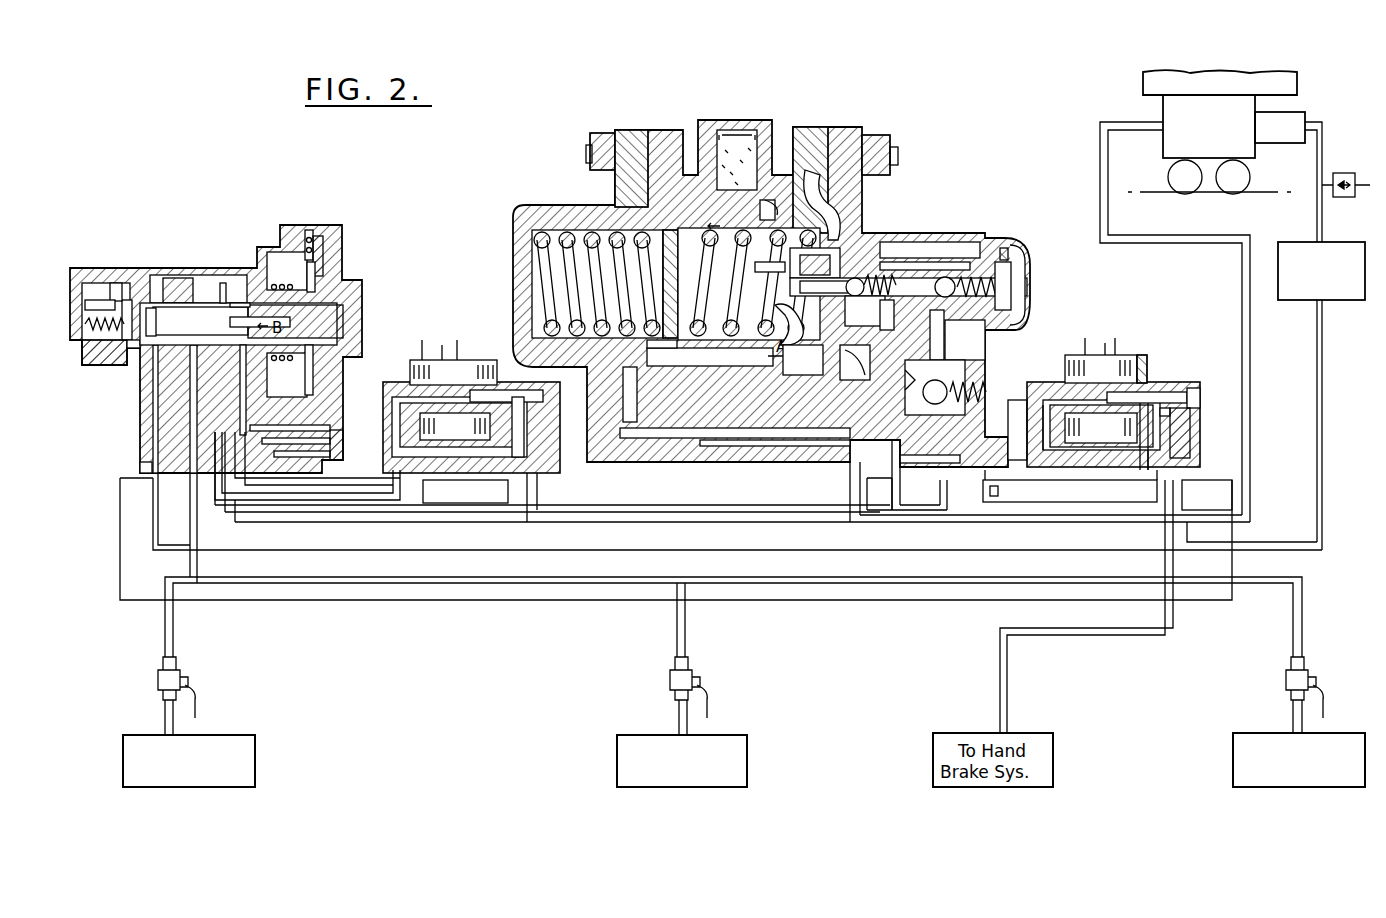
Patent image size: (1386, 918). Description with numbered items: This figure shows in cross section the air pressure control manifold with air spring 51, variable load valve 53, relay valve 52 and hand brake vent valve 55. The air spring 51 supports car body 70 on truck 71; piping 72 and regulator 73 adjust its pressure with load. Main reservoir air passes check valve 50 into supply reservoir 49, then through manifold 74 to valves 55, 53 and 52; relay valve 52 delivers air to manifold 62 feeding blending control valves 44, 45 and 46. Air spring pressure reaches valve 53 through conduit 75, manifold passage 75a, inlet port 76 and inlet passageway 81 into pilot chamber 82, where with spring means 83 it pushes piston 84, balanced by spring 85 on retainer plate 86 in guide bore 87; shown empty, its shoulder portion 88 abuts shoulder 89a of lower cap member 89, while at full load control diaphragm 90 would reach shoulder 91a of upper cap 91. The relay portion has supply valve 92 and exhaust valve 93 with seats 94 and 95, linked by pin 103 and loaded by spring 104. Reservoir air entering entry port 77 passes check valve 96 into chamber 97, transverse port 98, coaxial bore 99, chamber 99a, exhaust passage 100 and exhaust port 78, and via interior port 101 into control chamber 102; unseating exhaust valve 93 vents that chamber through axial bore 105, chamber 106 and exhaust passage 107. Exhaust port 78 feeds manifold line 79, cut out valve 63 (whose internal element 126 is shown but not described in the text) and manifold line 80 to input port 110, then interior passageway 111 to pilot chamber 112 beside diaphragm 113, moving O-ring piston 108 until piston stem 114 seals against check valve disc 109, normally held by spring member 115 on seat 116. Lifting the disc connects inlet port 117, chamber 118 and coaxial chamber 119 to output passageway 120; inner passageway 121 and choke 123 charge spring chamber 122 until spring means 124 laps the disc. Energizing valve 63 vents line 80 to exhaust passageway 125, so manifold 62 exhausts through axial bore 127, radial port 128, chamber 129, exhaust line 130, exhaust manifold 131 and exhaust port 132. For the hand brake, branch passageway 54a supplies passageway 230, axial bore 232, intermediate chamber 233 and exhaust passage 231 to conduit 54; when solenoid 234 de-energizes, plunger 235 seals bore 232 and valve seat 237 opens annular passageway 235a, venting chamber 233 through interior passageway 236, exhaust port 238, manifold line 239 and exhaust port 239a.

The blending control valve 44 is at (248, 750).
The blending control valve 45 is at (740, 752).
The blending control valve 46 is at (1233, 772).
The supply reservoir 49 is at (1303, 300).
The check valve 50 is at (1358, 166).
The air spring mechanism 51 is at (1185, 102).
The relay valve 52 is at (316, 225).
The variable load control valve 53 is at (737, 118).
The conduit 54 is at (1126, 645).
The branch passageway 54a is at (1211, 503).
The hand brake vent valve 55 is at (1185, 355).
The output manifold 62 is at (197, 532).
The service brake cut out valve 63 is at (466, 342).
The car body 70 is at (1250, 72).
The truck 71 is at (1201, 190).
The piping 72 is at (1322, 145).
The regulator 73 is at (1290, 125).
The manifold line 74 is at (120, 518).
The conduit 75 is at (1242, 308).
The manifold passage 75a is at (1048, 522).
The inlet passage 76 is at (848, 492).
The entry port 77 is at (965, 462).
The exhaust port 78 is at (900, 479).
The manifold line 79 is at (606, 510).
The manifold line 80 is at (396, 522).
The inlet passageway 81 is at (703, 440).
The pilot chamber 82 is at (565, 228).
The spring means 83 is at (590, 272).
The piston 84 is at (745, 356).
The spring 85 is at (749, 279).
The retainer plate 86 is at (850, 245).
The guide bore 87 is at (778, 208).
The shoulder portion 88 is at (648, 175).
The lower cap member 89 is at (520, 240).
The shoulder 89a is at (660, 228).
The control diaphragm 90 is at (835, 215).
The upper cap 91 is at (838, 150).
The shoulder 91a is at (905, 270).
The supply valve 92 is at (1000, 255).
The exhaust valve 93 is at (846, 290).
The valve seat 94 is at (942, 300).
The valve seat 95 is at (815, 263).
The check valve 96 is at (975, 398).
The chamber 97 is at (955, 365).
The transverse port 98 is at (939, 335).
The coaxial bore 99 is at (900, 330).
The chamber 99a is at (865, 318).
The exhaust passage 100 is at (922, 395).
The interior port 101 is at (858, 366).
The control chamber 102 is at (800, 345).
The pin 103 is at (965, 278).
The spring 104 is at (1012, 272).
The axial bore 105 is at (790, 292).
The chamber 106 is at (782, 432).
The exhaust passage 107 is at (750, 150).
The O-ring piston 108 is at (300, 310).
The double seated rubber check valve disc 109 is at (120, 300).
The input port 110 is at (230, 470).
The interior passageway 111 is at (300, 426).
The pilot chamber 112 is at (320, 250).
The diaphragm 113 is at (312, 245).
The piston stem 114 is at (133, 352).
The spring member 115 is at (90, 340).
The seat 116 is at (155, 290).
The inlet port 117 is at (146, 470).
The chamber 118 is at (115, 365).
The coaxial chamber 119 is at (153, 400).
The output passageway 120 is at (210, 400).
The inner passageway 121 is at (242, 300).
The spring chamber 122 is at (312, 280).
The choke 123 is at (287, 271).
The spring means 124 is at (322, 352).
The exhaust passageway 125 is at (500, 515).
The solenoid coil 126 is at (430, 490).
The axial bore 127 is at (225, 290).
The radial port 128 is at (287, 375).
The chamber 129 is at (225, 323).
The exhaust line 130 is at (243, 380).
The exhaust manifold 131 is at (380, 478).
The exhaust port 132 is at (335, 450).
The passageway 230 is at (1185, 462).
The exhaust passage 231 is at (1180, 440).
The axial bore 232 is at (1195, 392).
The intermediate chamber 233 is at (1170, 392).
The solenoid 234 is at (1102, 355).
The plunger 235 is at (1158, 380).
The annular passageway 235a is at (1101, 428).
The interior passageway 236 is at (1040, 440).
The valve seat 237 is at (1172, 410).
The exhaust port 238 is at (1150, 482).
The manifold line 239 is at (1048, 482).
The exhaust port 239a is at (1015, 490).